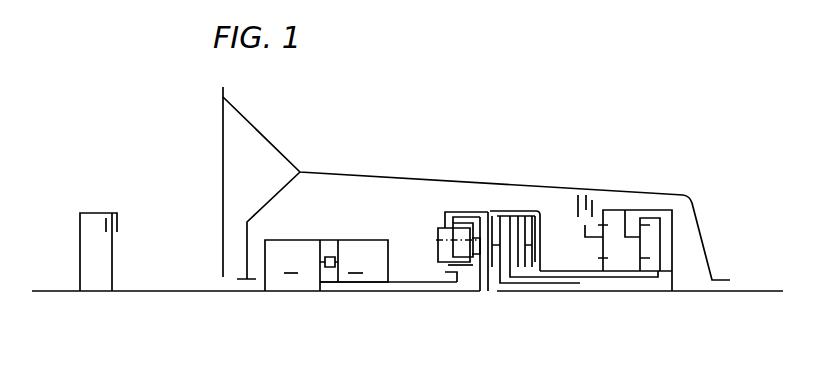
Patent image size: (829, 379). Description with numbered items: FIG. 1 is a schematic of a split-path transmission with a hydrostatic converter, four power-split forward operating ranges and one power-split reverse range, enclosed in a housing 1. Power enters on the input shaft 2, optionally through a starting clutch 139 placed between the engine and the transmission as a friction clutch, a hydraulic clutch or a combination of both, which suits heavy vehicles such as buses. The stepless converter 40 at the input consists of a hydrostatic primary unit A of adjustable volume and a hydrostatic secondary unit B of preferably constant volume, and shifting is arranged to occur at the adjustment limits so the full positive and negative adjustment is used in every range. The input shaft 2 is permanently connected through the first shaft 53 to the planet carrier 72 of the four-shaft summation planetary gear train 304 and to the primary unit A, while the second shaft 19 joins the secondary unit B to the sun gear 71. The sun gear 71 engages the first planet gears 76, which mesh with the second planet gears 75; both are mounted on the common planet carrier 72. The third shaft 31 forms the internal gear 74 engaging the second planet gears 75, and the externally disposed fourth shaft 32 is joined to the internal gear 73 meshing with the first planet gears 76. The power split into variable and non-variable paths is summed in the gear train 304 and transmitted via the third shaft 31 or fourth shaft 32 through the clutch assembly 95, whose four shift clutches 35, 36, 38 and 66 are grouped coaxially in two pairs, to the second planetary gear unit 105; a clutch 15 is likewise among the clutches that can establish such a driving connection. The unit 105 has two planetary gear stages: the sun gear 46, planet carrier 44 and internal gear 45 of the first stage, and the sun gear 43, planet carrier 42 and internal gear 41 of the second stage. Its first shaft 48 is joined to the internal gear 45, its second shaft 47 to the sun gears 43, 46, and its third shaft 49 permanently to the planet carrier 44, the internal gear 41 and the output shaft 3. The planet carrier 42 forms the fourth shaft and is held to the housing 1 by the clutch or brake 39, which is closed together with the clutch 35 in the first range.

The housing 1 is at (300, 172).
The input shaft 2 is at (193, 291).
The output shaft 3 is at (770, 291).
The clutch 15 is at (333, 238).
The second shaft 19 is at (398, 283).
The third shaft 31 is at (487, 215).
The fourth shaft 32 is at (479, 210).
The shift clutch 35 is at (511, 220).
The shift clutch 36 is at (542, 220).
The shift clutch 38 is at (518, 269).
The clutch or brake 39 is at (584, 212).
The stepless converter 40 is at (319, 301).
The internal gear 41 is at (606, 216).
The planet carrier 42 is at (585, 237).
The sun gear 43 is at (604, 273).
The planet carrier 44 is at (626, 217).
The internal gear 45 is at (654, 216).
The sun gear 46 is at (644, 260).
The second shaft 47 is at (591, 272).
The first shaft 48 is at (581, 279).
The third shaft 49 is at (562, 287).
The first shaft 53 is at (416, 284).
The shift clutch 66 is at (493, 268).
The sun gear 71 is at (452, 276).
The planet carrier 72 is at (478, 276).
The internal gear 73 is at (455, 223).
The internal gear 74 is at (463, 224).
The second planet gears 75 is at (472, 220).
The first planet gears 76 is at (438, 234).
The clutch assembly 95 is at (512, 298).
The second planetary gear unit 105 is at (658, 169).
The starting clutch 139 is at (115, 213).
The summation planetary gear train 304 is at (438, 168).